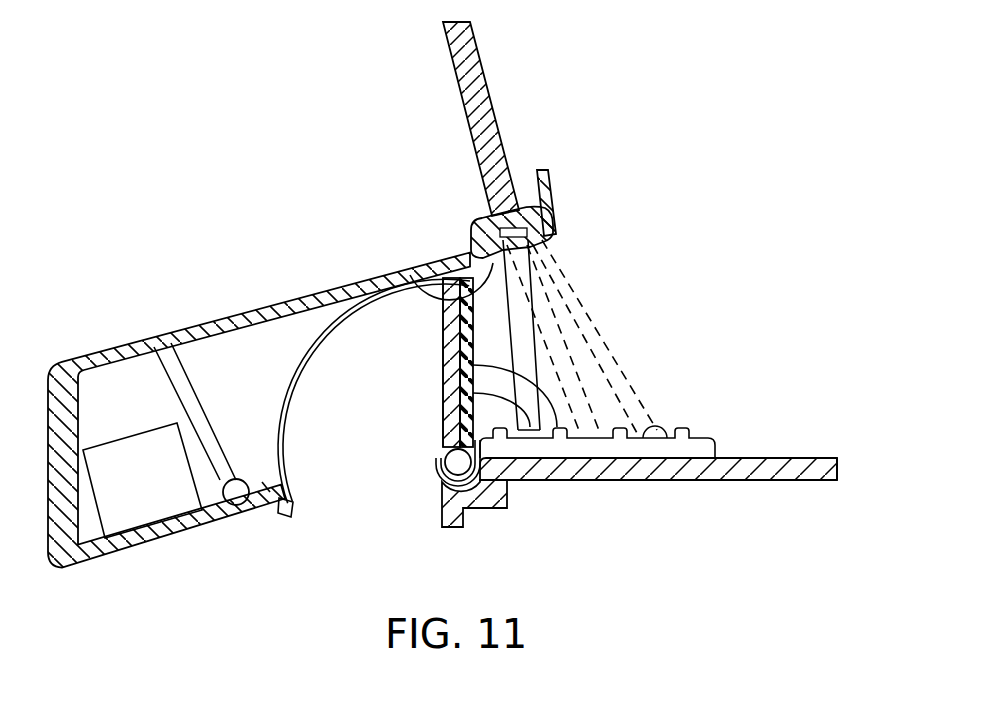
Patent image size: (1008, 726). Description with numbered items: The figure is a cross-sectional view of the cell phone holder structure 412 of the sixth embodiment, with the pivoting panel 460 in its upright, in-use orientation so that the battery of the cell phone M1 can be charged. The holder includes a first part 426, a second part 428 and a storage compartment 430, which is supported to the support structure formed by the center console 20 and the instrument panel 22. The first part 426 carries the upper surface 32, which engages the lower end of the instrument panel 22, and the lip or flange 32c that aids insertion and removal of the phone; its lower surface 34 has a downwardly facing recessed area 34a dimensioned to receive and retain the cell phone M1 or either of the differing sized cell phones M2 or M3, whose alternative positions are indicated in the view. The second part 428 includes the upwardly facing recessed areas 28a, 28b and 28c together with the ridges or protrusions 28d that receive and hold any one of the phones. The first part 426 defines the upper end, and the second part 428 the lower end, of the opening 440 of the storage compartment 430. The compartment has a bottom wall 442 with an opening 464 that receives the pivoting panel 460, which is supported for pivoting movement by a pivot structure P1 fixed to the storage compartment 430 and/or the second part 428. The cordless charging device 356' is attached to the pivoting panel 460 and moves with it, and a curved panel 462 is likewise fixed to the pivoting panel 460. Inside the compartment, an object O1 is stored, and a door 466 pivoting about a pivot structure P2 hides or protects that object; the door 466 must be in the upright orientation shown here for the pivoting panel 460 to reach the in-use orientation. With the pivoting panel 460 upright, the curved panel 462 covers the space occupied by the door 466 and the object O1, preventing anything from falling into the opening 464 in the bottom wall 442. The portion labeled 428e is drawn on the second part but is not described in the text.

The instrument panel 22 is at (472, 90).
The cell phone holder structure 412 is at (686, 117).
The storage compartment 430 is at (204, 306).
The upper surface 32 is at (480, 220).
The lip or flange 32c is at (553, 178).
The first part 426 is at (560, 196).
The lower surface 34 is at (548, 242).
The downwardly facing recessed area 34a is at (545, 265).
The opening 440 is at (438, 252).
The pivoting panel 460 is at (407, 276).
The curved panel 462 is at (294, 414).
The opening 464 is at (295, 504).
The door 466 is at (196, 392).
The bottom wall 442 is at (264, 498).
The pivot structure P2 is at (237, 506).
The object O1 is at (145, 500).
The cordless charging device 356' is at (410, 362).
The ridges or protrusions 28d is at (473, 361).
The upwardly facing recessed area 28a is at (473, 389).
The upwardly facing recessed area 28b is at (590, 437).
The upwardly facing recessed area 28c is at (667, 440).
The cell phone M1 is at (523, 327).
The cell phone M2 is at (570, 377).
The cell phone M3 is at (584, 331).
The pivot structure P1 is at (456, 462).
The second part 428 is at (720, 443).
The base rail block 428e is at (478, 482).
The center console 20 is at (806, 458).